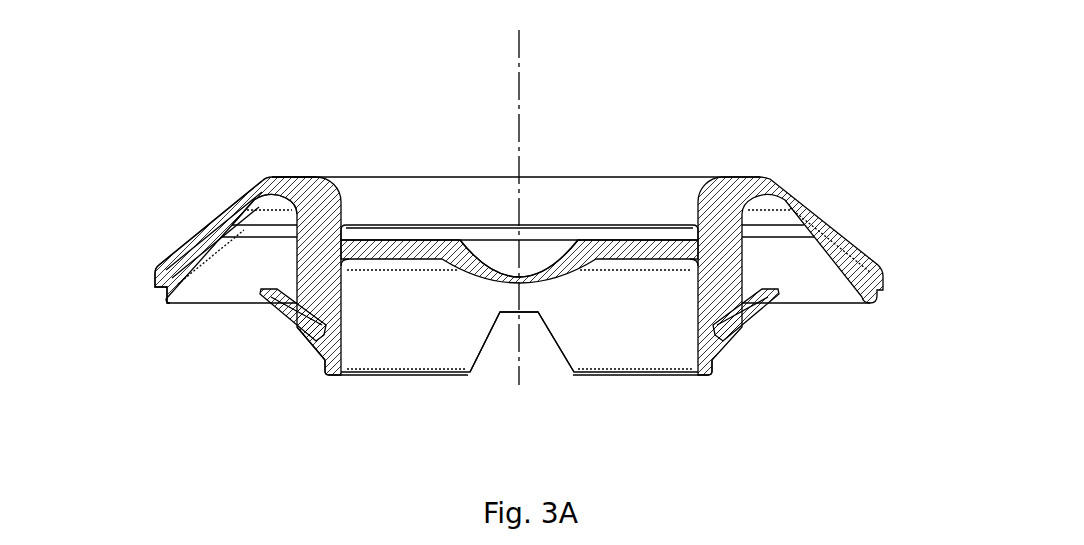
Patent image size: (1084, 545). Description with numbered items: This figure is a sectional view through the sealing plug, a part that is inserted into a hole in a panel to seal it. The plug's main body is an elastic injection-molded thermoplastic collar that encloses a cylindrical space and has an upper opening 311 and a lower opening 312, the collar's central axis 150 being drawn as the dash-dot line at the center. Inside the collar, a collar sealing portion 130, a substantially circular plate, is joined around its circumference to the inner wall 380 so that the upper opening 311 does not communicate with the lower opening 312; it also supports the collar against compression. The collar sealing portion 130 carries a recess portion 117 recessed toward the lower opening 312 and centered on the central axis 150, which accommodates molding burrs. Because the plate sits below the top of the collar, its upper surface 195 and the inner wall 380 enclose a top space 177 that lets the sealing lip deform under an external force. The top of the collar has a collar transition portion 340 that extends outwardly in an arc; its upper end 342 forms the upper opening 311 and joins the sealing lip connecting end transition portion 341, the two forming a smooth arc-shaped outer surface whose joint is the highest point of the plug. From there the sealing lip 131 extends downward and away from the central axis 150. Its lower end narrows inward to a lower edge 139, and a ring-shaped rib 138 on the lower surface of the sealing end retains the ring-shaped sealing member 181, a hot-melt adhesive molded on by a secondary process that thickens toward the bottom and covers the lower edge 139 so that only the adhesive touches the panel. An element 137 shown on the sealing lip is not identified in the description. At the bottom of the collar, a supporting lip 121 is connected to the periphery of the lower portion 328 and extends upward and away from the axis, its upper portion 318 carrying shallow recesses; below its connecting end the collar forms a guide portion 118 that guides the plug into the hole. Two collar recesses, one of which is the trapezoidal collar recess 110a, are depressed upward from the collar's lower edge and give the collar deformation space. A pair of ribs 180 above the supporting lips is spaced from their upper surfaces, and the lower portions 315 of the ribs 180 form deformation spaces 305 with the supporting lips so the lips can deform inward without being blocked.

The collar recess 110a is at (540, 353).
The recess portion 117 is at (547, 240).
The guide portion 118 is at (333, 362).
The supporting lip 121 is at (747, 322).
The collar sealing portion 130 is at (414, 244).
The sealing lip 131 is at (220, 220).
The lip inner layer 137 is at (200, 240).
The ring-shaped rib 138 is at (173, 270).
The lower edge 139 is at (160, 280).
The central axis 150 is at (546, 205).
The top space 177 is at (467, 190).
The ribs 180 is at (305, 290).
The sealing member 181 is at (852, 278).
The upper surface 195 is at (647, 228).
The deformation space 305 is at (306, 323).
The upper opening 311 is at (698, 195).
The lower opening 312 is at (672, 362).
The lower portions 315 is at (303, 318).
The upper portion 318 is at (768, 308).
The lower portion 328 is at (348, 380).
The collar transition portion 340 is at (320, 195).
The sealing lip connecting end transition portion 341 is at (268, 190).
The upper end 342 is at (290, 178).
The inner wall 380 is at (697, 305).